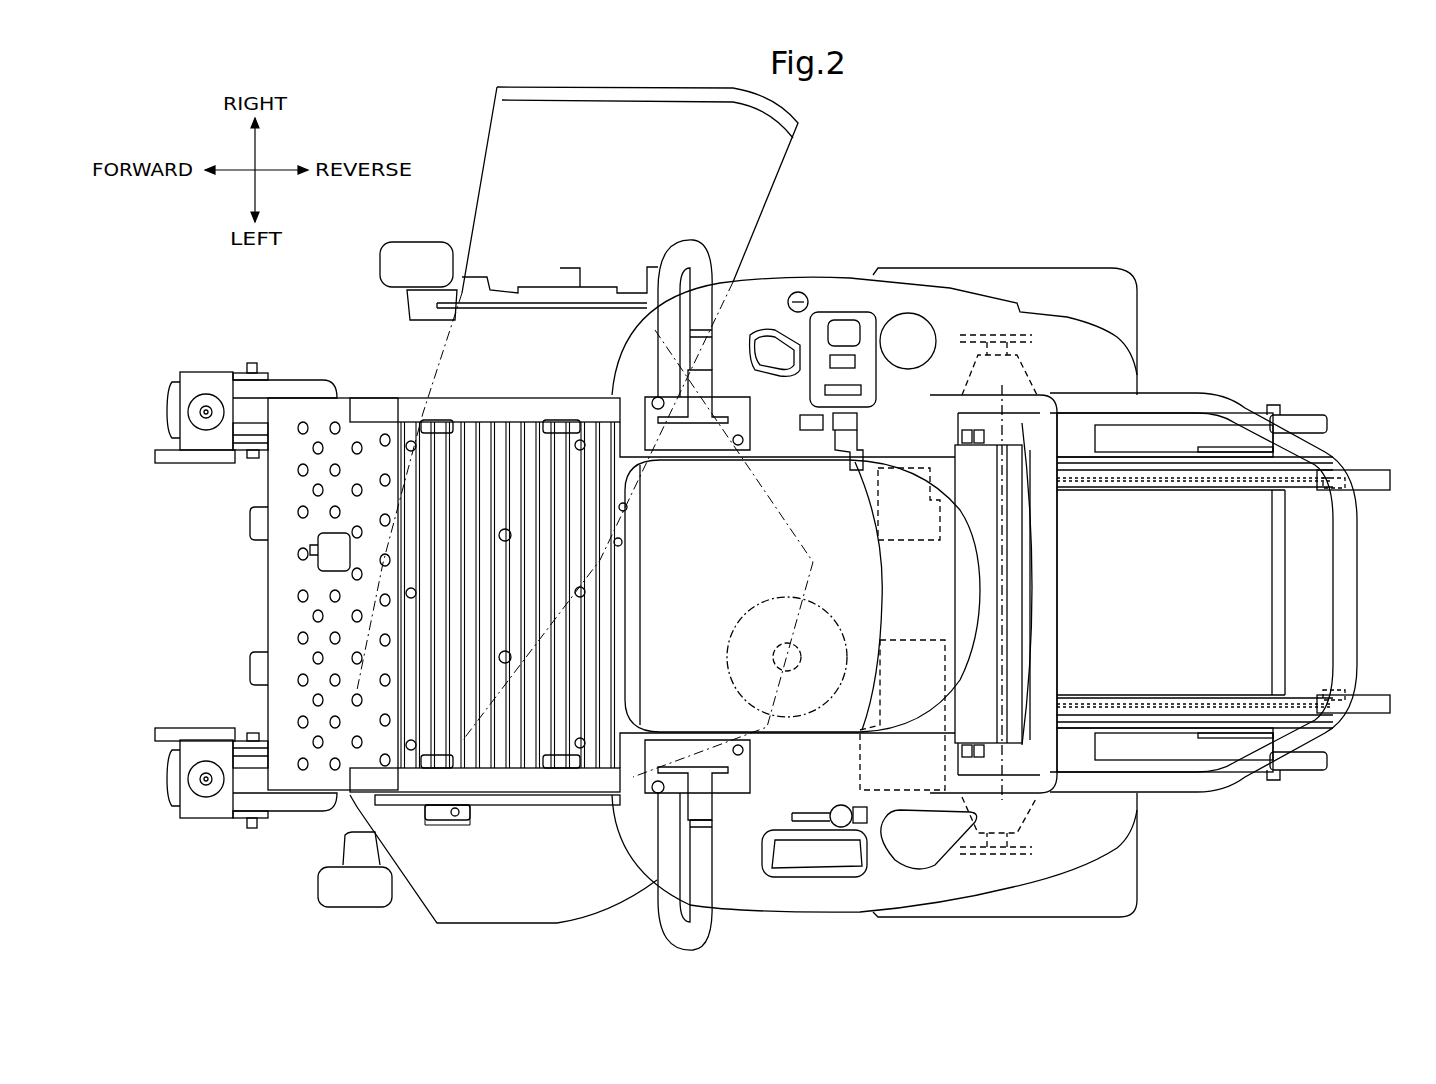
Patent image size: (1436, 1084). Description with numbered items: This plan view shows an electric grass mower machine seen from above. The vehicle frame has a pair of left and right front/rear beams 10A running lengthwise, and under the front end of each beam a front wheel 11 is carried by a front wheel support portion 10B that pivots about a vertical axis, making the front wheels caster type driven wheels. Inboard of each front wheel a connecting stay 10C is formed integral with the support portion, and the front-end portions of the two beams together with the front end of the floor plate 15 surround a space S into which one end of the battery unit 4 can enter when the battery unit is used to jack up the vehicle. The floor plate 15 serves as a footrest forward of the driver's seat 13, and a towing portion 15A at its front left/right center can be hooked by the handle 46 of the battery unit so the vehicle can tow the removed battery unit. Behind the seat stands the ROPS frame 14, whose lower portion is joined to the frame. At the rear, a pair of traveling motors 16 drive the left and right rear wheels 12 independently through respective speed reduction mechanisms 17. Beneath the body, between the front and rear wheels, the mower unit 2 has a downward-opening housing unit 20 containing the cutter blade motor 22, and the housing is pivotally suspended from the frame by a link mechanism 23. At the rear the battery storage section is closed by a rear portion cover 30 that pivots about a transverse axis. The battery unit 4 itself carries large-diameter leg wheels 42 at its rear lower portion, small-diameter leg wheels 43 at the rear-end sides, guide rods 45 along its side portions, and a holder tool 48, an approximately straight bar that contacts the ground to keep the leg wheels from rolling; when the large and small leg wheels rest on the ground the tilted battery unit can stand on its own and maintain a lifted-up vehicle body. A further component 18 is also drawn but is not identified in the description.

The mower unit 2 is at (425, 912).
The battery unit 4 is at (1230, 589).
The front/rear beam 10A is at (540, 400).
The front wheel support portion 10B is at (203, 380).
The connecting stay 10C is at (200, 463).
The front wheel 11 is at (280, 380).
The rear wheel 12 is at (1072, 268).
The driver's seat 13 is at (775, 470).
The ROPS frame 14 is at (1033, 405).
The floor plate 15 is at (352, 410).
The towing portion 15A is at (260, 655).
The traveling motor 16 is at (882, 515).
The speed reduction mechanism 17 is at (967, 377).
The handle 18 is at (678, 262).
The housing unit 20 is at (545, 918).
The cutter blade motor 22 is at (752, 600).
The link mechanism 23 is at (483, 807).
The rear portion cover 30 is at (1245, 400).
The large-diameter leg wheel 42 is at (1318, 418).
The small-diameter leg wheel 43 is at (1365, 492).
The guide rod 45 is at (1185, 440).
The handle 46 is at (1270, 595).
The holder tool 48 is at (1372, 470).
The space S is at (196, 592).